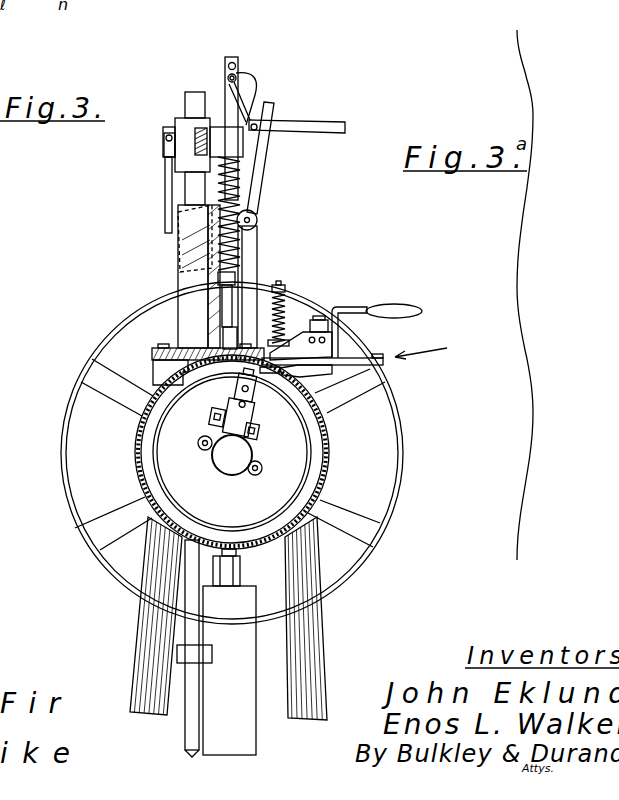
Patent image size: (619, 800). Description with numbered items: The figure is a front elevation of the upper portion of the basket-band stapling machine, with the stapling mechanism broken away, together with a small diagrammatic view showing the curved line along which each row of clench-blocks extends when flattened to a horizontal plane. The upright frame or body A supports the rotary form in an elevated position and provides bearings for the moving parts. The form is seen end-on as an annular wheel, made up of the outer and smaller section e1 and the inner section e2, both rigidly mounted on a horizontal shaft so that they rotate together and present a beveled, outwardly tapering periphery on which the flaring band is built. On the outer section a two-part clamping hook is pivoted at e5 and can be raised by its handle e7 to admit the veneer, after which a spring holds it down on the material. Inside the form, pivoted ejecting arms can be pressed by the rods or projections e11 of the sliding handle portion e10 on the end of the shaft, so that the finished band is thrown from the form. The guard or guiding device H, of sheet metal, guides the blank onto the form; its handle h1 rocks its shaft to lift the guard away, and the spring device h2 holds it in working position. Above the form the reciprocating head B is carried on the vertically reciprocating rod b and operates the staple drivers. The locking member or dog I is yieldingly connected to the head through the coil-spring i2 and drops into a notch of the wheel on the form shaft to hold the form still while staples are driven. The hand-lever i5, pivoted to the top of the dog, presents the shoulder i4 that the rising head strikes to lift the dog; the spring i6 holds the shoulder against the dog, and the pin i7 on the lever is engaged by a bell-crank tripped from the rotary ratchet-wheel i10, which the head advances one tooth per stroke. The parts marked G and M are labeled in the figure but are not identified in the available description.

The upright frame or body A is at (150, 362).
The reciprocating head B is at (195, 142).
The weight G is at (235, 718).
The guard or guiding device H is at (300, 369).
The locking member or dog I is at (233, 342).
The wheel with spokes M is at (122, 328).
The vertically-reciprocating rod b is at (193, 592).
The outer section of the rotary form e1 is at (232, 452).
The inner section of the rotary form e2 is at (327, 474).
The pivot of the hook e5 is at (253, 430).
The handle of the hook e7 is at (282, 421).
The sliding handle portion e10 is at (232, 455).
The rods or projections e11 is at (254, 474).
The handle of the guard h1 is at (416, 305).
The spring device h2 is at (285, 293).
The coil-spring i2 is at (166, 187).
The shoulder i4 is at (252, 113).
The hand-lever i5 is at (300, 124).
The spring i6 is at (238, 66).
The pin i7 is at (266, 130).
The rotary ratchet-wheel i10 is at (173, 237).